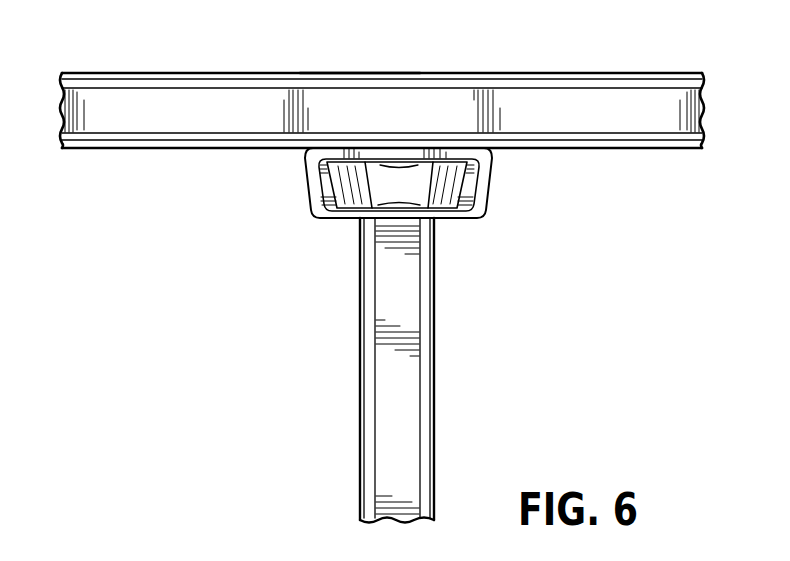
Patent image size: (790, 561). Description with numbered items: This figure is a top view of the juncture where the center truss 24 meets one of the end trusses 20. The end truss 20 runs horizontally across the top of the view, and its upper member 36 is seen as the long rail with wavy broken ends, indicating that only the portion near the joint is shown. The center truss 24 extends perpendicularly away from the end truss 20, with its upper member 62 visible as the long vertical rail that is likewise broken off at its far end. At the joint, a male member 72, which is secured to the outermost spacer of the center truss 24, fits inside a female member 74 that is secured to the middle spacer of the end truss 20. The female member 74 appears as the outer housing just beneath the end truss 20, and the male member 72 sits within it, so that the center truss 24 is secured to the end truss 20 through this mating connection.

The end truss 20 is at (522, 72).
The upper member 36 is at (336, 84).
The male member 72 is at (342, 216).
The female member 74 is at (484, 182).
The upper member 62 is at (368, 370).
The center truss 24 is at (360, 370).